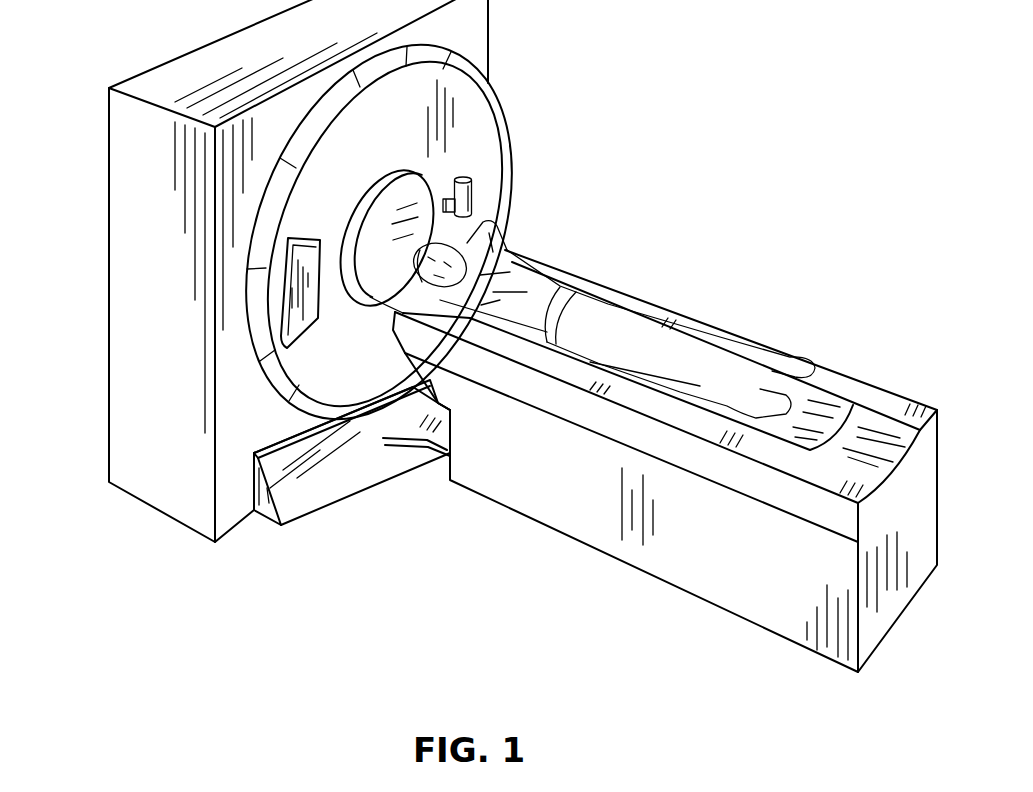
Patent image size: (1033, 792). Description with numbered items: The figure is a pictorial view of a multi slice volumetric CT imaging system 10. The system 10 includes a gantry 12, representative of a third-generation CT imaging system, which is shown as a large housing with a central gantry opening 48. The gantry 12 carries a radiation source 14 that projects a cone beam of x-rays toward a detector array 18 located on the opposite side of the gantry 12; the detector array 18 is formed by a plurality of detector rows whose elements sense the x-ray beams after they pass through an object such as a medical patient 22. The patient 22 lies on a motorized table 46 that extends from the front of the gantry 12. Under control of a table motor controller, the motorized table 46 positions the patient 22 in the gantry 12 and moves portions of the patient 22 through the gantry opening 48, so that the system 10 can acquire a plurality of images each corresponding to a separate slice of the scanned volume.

The multi slice volumetric CT imaging system 10 is at (425, 471).
The gantry 12 is at (128, 123).
The radiation source 14 is at (471, 197).
The detector array 18 is at (308, 330).
The patient 22 is at (533, 278).
The motorized table 46 is at (540, 497).
The gantry opening 48 is at (358, 207).